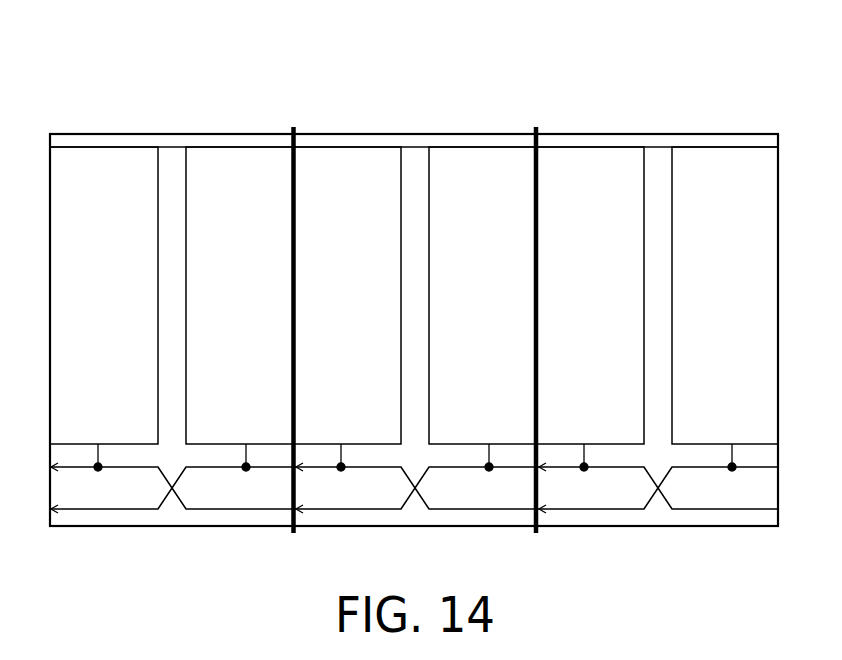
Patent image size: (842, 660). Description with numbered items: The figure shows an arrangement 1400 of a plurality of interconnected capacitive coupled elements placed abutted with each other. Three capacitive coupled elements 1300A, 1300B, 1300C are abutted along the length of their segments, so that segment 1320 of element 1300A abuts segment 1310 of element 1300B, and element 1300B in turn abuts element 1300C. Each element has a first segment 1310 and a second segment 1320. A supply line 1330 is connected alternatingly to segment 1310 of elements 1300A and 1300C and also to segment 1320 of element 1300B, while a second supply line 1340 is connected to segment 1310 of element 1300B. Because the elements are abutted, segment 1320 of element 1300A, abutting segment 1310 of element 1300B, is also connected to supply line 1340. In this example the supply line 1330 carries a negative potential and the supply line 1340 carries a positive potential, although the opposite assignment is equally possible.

The battery module assembly 1400 is at (102, 78).
The capacitive coupled element 1300A is at (147, 133).
The capacitive coupled element 1300B is at (388, 133).
The capacitive coupled element 1300C is at (628, 133).
The segment 1310 is at (117, 202).
The segment 1320 is at (250, 202).
The supply line 1330 is at (72, 467).
The supply line 1340 is at (64, 509).